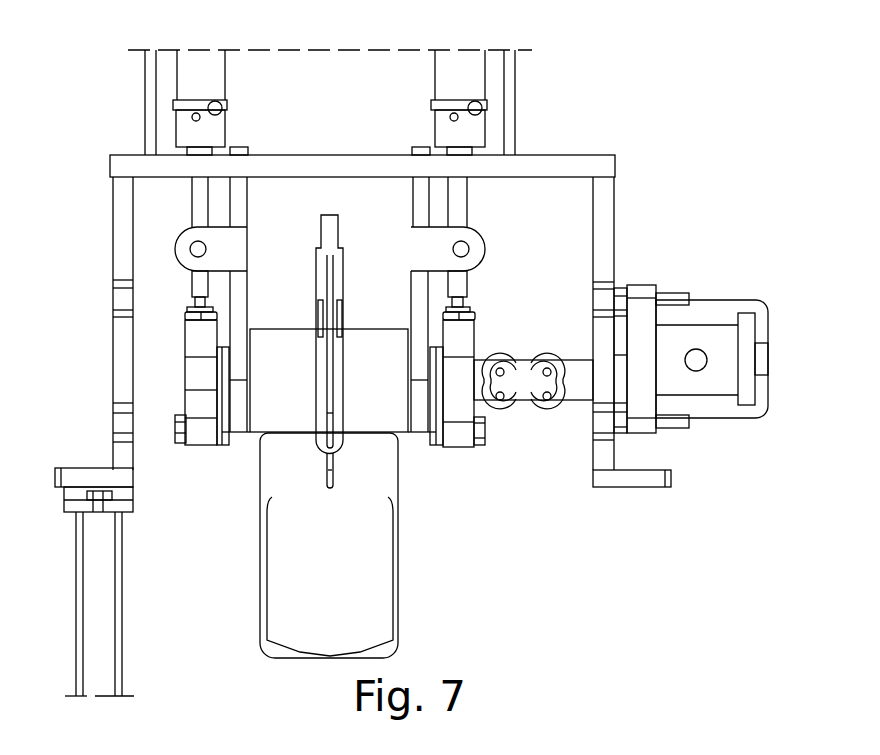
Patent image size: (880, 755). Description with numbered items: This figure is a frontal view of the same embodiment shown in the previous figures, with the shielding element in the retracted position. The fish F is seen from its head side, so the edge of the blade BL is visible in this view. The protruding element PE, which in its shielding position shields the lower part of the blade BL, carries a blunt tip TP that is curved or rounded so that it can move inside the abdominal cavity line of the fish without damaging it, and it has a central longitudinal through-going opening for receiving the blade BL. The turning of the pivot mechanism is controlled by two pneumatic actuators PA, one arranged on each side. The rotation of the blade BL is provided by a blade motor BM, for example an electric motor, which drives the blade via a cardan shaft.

The pneumatic actuator PA is at (216, 64).
The protruding element PE is at (320, 356).
The blunt tip TP is at (307, 444).
The blade BL is at (331, 470).
The fish F is at (329, 545).
The blade motor BM is at (703, 338).